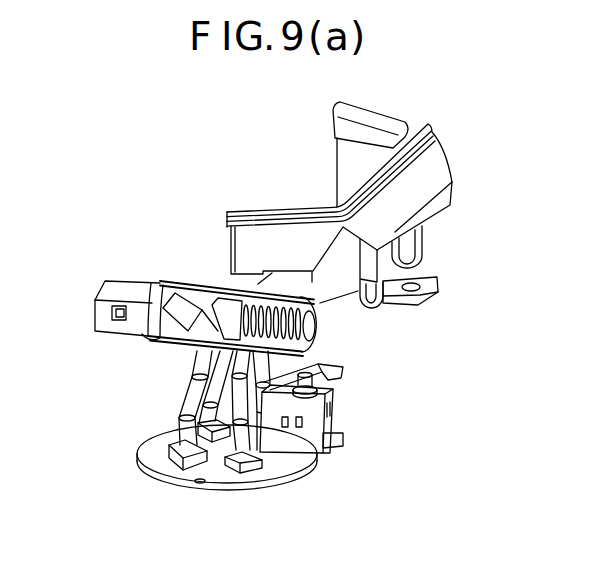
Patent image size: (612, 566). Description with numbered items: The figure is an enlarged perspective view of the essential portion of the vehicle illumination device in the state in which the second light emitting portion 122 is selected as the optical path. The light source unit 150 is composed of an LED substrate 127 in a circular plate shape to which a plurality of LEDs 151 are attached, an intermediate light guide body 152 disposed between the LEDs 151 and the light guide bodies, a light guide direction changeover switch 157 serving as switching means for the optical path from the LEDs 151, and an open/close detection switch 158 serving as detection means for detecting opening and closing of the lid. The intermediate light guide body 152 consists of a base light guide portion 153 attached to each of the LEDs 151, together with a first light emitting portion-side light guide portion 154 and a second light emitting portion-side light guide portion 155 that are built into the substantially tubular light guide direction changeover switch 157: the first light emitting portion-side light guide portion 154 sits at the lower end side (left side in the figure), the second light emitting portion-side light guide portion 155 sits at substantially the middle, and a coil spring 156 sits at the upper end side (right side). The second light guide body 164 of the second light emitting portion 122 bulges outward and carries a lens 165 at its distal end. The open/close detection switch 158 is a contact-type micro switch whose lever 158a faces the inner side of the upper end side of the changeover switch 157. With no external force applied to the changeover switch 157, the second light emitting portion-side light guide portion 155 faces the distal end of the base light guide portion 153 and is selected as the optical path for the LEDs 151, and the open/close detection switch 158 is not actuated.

The light source unit 150 is at (187, 182).
The second light emitting portion 122 is at (426, 168).
The second light guide body 164 is at (387, 215).
The lens 165 is at (428, 104).
The light guide direction changeover switch 157 is at (192, 287).
The coil spring 156 is at (297, 298).
The intermediate light guide body 152 is at (82, 346).
The first light emitting portion-side light guide portion 154 is at (168, 341).
The second light emitting portion-side light guide portion 155 is at (160, 340).
The base light guide portion 153 is at (175, 405).
The LEDs 151 is at (203, 442).
The LED substrate 127 is at (291, 480).
The open/close detection switch 158 is at (334, 407).
The lever 158a is at (341, 365).